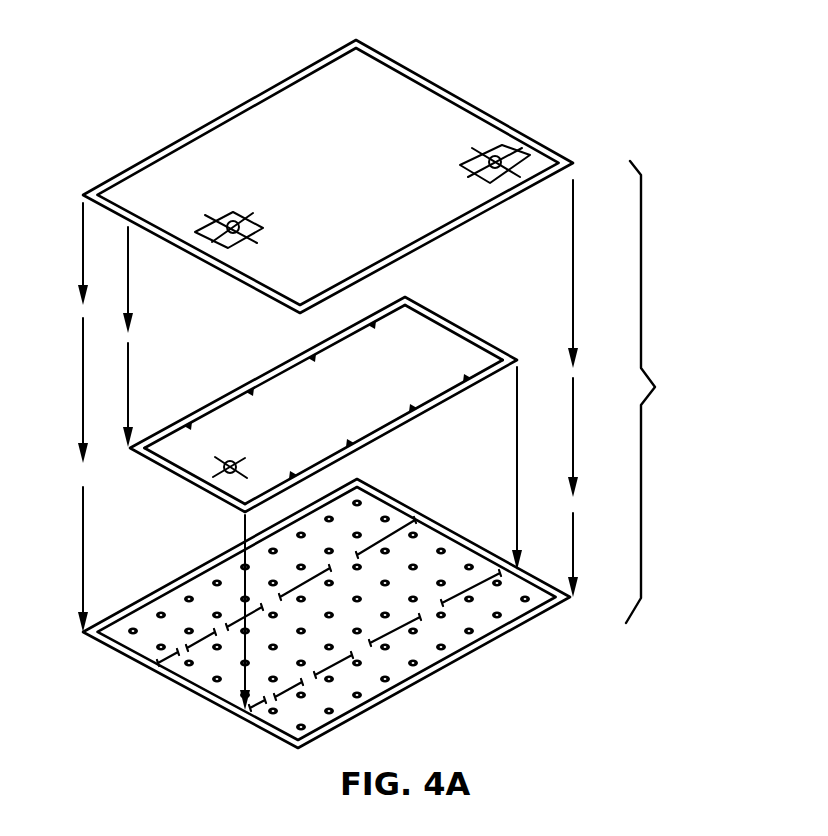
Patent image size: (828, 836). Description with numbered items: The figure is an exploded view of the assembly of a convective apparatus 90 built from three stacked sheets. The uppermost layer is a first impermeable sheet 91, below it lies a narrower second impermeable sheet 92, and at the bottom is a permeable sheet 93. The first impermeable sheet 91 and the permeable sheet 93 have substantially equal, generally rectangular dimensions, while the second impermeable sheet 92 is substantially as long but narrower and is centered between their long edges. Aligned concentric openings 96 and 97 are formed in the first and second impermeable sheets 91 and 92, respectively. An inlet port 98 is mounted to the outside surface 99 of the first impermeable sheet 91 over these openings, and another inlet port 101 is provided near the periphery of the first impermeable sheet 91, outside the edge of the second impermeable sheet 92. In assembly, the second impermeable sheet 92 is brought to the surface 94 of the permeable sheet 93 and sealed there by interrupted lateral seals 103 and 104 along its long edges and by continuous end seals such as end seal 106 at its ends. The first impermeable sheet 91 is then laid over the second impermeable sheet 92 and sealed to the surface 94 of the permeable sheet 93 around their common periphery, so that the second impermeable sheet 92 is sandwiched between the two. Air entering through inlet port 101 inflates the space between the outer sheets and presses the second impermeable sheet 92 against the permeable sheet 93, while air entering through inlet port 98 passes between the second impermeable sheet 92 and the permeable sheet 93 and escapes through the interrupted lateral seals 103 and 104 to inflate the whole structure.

The convective apparatus 90 is at (668, 392).
The first impermeable sheet 91 is at (412, 70).
The second impermeable sheet 92 is at (432, 310).
The permeable sheet 93 is at (427, 678).
The surface of the permeable sheet 94 is at (527, 588).
The opening in the first impermeable sheet 96 is at (233, 220).
The opening in the second impermeable sheet 97 is at (228, 458).
The inlet port 98 is at (253, 233).
The outside surface 99 is at (428, 113).
The inlet port 101 is at (532, 147).
The interrupted lateral seal 103 is at (275, 367).
The interrupted lateral seal 104 is at (387, 434).
The continuous end seal 106 is at (462, 333).